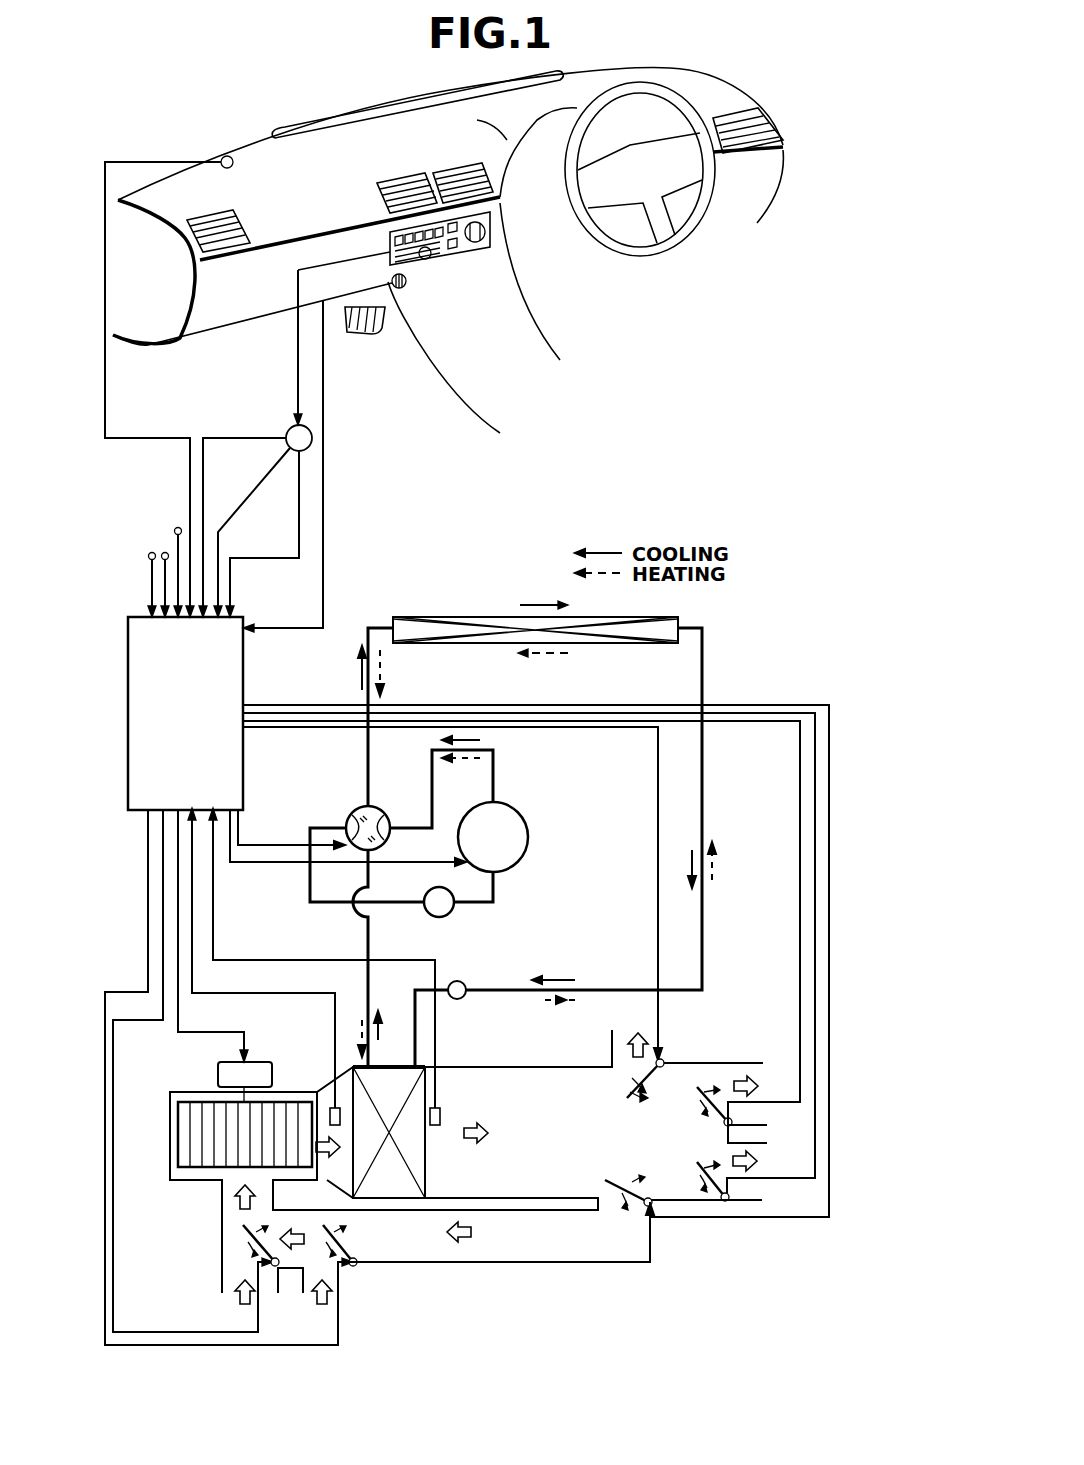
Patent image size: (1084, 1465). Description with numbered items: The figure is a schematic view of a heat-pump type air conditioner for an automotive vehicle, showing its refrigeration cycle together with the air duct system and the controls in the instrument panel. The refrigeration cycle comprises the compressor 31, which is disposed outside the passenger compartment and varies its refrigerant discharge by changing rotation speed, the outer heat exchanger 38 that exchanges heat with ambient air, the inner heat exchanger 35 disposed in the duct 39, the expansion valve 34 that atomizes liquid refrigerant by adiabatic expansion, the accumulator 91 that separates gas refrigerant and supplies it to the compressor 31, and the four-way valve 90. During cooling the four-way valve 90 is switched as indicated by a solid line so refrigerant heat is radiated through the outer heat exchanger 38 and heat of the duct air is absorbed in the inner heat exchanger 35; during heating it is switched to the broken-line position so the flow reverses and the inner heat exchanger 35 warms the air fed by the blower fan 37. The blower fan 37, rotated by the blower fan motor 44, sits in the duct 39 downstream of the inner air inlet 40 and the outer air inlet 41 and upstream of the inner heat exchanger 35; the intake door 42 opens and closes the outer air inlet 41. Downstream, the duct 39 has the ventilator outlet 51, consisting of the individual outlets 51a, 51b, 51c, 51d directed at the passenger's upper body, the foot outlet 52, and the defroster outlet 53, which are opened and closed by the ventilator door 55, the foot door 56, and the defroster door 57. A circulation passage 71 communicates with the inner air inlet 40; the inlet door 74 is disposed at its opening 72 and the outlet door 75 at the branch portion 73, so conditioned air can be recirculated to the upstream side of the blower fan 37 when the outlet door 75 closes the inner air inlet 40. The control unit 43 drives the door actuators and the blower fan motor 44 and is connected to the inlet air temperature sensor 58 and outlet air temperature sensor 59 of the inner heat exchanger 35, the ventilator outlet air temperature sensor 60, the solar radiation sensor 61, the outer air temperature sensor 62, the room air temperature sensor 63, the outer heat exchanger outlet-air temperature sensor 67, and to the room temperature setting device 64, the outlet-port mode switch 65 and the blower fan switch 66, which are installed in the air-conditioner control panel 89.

The compressor 31 is at (530, 840).
The expansion valve 34 is at (463, 983).
The inner heat exchanger 35 is at (425, 1182).
The blower fan 37 is at (208, 1170).
The outer heat exchanger 38 is at (440, 617).
The duct 39 is at (530, 1198).
The inner air inlet 40 is at (357, 1290).
The outer air inlet 41 is at (222, 1233).
The intake door 42 is at (243, 1247).
The control unit 43 is at (128, 748).
The blower fan motor 44 is at (257, 1060).
The ventilator outlet 51 is at (760, 1158).
The ventilator outlet 51a is at (237, 247).
The ventilator outlet 51b is at (402, 178).
The ventilator outlet 51c is at (470, 165).
The ventilator outlet 51d is at (742, 107).
The foot outlet 52 is at (352, 332).
The defroster outlet 53 is at (385, 98).
The ventilator door 55 is at (700, 1167).
The foot door 56 is at (637, 1102).
The defroster door 57 is at (700, 1092).
The inlet air temperature sensor 58 is at (330, 1108).
The outlet air temperature sensor 59 is at (440, 1108).
The outlet air temperature sensor 60 is at (150, 552).
The solar radiation sensor 61 is at (221, 158).
The outer air temperature sensor 62 is at (163, 551).
The room air temperature sensor 63 is at (403, 288).
The room temperature setting device 64 is at (228, 438).
The outlet-port mode switch 65 is at (253, 490).
The blower fan switch 66 is at (298, 527).
The outer heat exchanger outlet-air temperature sensor 67 is at (177, 527).
The circulation passage 71 is at (587, 1264).
The opening 72 is at (623, 1210).
The branch portion 73 is at (317, 1243).
The inlet door 74 is at (617, 1177).
The outlet door 75 is at (345, 1243).
The air-conditioner control panel 89 is at (465, 258).
The four-way valve 90 is at (355, 813).
The accumulator 91 is at (450, 917).